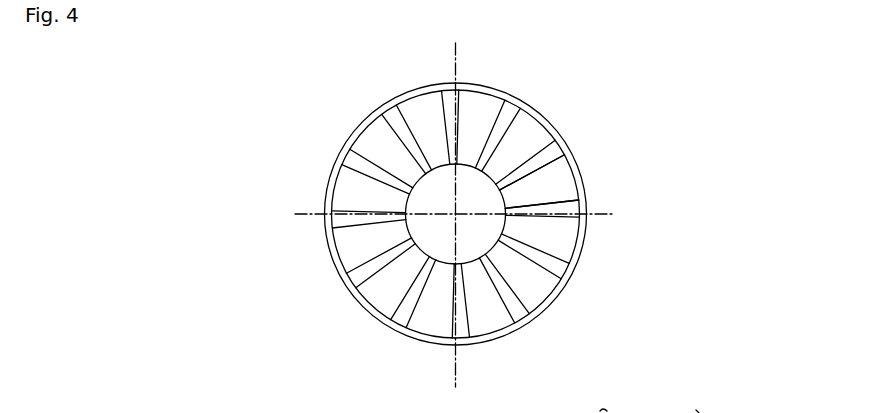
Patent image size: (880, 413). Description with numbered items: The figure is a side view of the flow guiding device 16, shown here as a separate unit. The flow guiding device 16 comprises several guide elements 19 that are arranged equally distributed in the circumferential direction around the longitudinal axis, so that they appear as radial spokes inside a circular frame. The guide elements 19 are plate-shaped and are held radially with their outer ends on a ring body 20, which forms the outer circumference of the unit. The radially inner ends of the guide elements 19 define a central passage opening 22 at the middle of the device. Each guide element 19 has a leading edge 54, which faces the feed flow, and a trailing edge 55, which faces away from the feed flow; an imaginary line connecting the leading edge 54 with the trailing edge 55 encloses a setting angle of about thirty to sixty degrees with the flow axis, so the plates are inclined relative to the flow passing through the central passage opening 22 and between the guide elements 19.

The flow guiding device 16 is at (362, 115).
The ring body 20 is at (555, 125).
The guide element 19 is at (567, 185).
The central passage opening 22 is at (456, 214).
The trailing edge 55 is at (510, 305).
The leading edge 54 is at (463, 312).